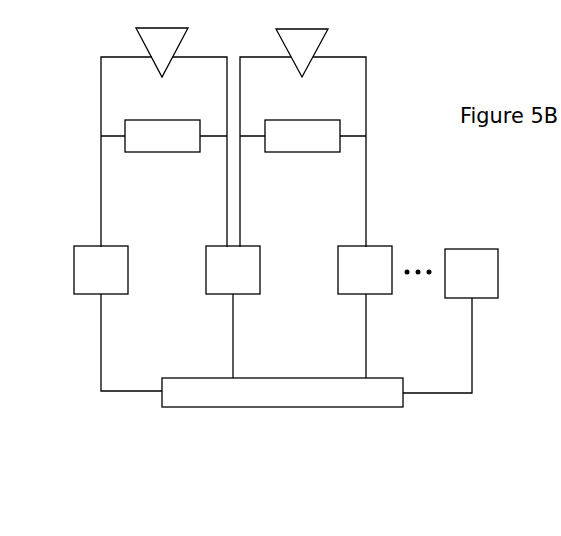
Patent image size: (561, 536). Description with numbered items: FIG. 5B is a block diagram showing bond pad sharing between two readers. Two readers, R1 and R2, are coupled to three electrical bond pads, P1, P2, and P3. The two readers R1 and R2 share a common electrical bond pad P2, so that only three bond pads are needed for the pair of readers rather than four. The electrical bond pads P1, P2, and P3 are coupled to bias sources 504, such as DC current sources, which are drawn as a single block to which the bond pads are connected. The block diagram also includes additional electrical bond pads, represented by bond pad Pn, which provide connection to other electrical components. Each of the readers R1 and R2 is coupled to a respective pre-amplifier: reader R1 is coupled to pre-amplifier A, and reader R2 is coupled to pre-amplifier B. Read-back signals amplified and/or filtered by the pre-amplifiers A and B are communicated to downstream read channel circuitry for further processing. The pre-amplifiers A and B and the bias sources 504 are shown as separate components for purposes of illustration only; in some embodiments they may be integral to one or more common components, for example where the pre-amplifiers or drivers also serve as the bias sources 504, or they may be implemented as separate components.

The bias sources 504 is at (300, 378).
The pre-amplifier A is at (162, 52).
The pre-amplifier B is at (302, 53).
The reader R1 is at (302, 136).
The reader R2 is at (162, 136).
The electrical bond pad P1 is at (101, 270).
The electrical bond pad P2 is at (233, 270).
The electrical bond pad P3 is at (365, 270).
The electrical bond pad Pn is at (471, 273).